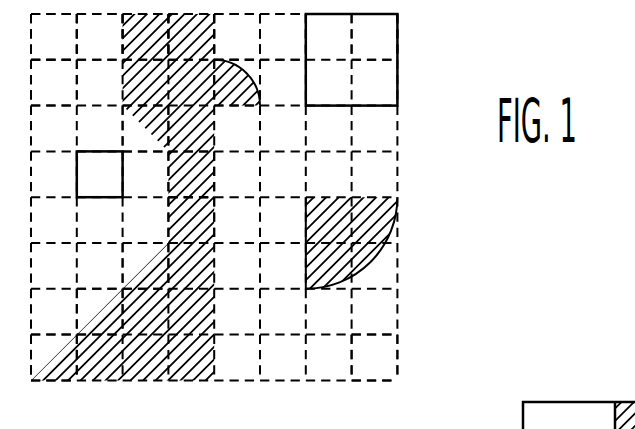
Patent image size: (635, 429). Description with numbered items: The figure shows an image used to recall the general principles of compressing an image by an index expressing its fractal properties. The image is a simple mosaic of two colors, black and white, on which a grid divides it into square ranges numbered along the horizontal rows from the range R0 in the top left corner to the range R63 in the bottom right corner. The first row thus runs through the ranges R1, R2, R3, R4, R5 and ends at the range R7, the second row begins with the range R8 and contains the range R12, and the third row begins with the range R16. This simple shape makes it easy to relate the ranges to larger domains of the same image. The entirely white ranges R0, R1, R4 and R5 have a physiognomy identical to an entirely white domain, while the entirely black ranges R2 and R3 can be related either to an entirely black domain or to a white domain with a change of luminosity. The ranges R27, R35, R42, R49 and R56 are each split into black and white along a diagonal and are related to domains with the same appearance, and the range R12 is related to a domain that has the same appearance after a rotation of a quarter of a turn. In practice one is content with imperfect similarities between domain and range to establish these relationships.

The range R0 is at (54, 37).
The range R1 is at (100, 37).
The range R2 is at (146, 37).
The range R3 is at (191, 37).
The range R4 is at (237, 37).
The range R5 is at (283, 37).
The range R7 is at (375, 37).
The range R8 is at (54, 83).
The range R12 is at (238, 83).
The range R16 is at (148, 129).
The range R27 is at (192, 174).
The range R35 is at (192, 220).
The range R42 is at (147, 266).
The range R49 is at (103, 312).
The range R56 is at (55, 358).
The range R63 is at (376, 358).